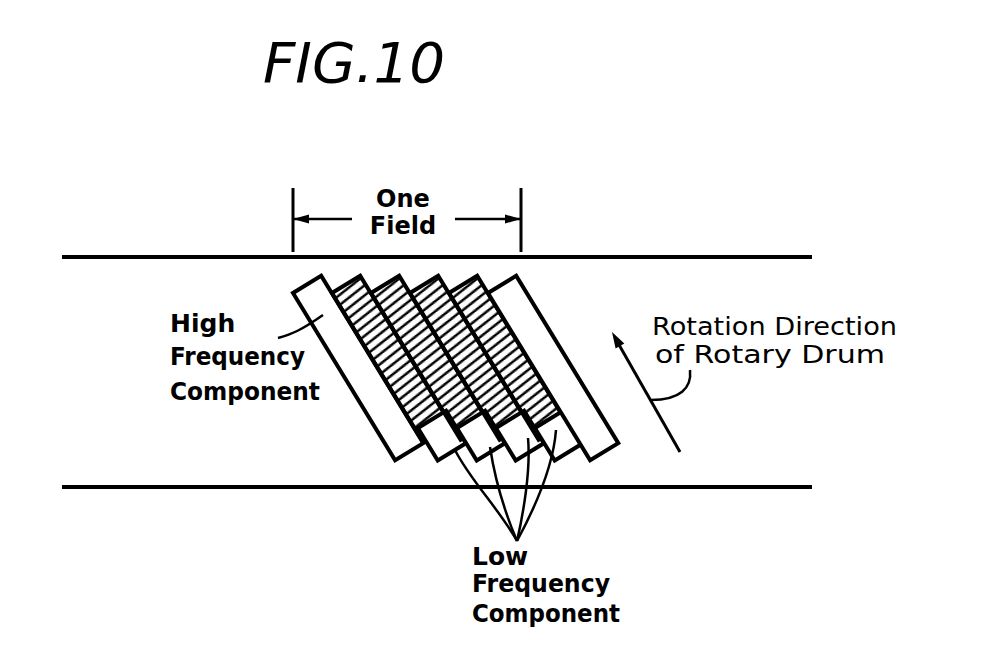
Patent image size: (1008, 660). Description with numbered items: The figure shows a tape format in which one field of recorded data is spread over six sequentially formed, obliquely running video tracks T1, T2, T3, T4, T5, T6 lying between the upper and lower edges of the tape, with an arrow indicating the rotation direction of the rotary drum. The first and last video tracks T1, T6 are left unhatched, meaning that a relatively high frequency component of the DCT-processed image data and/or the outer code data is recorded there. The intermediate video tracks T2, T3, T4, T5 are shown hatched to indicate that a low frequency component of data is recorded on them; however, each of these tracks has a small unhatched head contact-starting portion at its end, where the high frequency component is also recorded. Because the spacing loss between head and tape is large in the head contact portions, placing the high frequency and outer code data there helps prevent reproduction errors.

The video track T1 is at (356, 360).
The video track T2 is at (399, 361).
The video track T3 is at (437, 361).
The video track T4 is at (476, 361).
The video track T5 is at (516, 361).
The video track T6 is at (553, 360).